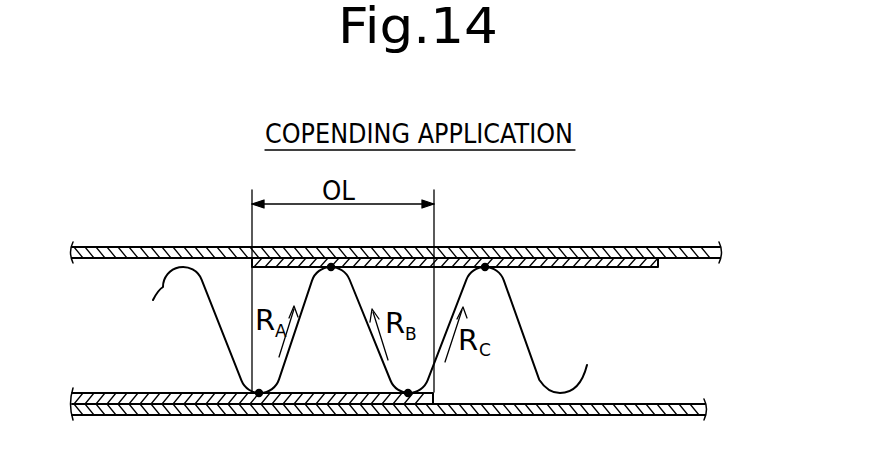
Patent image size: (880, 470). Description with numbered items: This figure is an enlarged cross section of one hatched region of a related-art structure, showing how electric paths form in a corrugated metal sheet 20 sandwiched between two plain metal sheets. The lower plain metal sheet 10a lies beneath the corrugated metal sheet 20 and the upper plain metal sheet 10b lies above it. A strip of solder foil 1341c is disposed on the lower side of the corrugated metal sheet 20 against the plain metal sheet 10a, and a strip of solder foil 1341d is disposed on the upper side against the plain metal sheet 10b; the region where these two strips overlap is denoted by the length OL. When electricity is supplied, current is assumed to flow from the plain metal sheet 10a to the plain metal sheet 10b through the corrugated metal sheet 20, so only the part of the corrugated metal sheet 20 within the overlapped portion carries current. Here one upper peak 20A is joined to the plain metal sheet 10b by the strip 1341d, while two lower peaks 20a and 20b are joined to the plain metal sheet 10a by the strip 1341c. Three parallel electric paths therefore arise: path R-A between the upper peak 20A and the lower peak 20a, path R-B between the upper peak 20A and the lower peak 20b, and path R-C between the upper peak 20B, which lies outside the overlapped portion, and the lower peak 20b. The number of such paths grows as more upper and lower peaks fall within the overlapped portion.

The plain metal sheet 10a is at (620, 410).
The plain metal sheet 10b is at (664, 246).
The strip of solder foil 1341c is at (118, 397).
The strip of solder foil 1341d is at (634, 262).
The corrugated metal sheet 20 is at (526, 342).
The upper peak 20A is at (332, 269).
The upper peak 20B is at (486, 269).
The lower peak 20a is at (262, 391).
The lower peak 20b is at (411, 391).